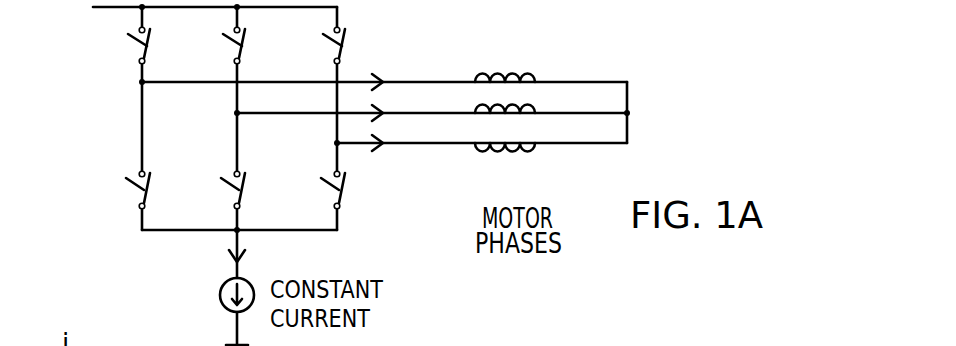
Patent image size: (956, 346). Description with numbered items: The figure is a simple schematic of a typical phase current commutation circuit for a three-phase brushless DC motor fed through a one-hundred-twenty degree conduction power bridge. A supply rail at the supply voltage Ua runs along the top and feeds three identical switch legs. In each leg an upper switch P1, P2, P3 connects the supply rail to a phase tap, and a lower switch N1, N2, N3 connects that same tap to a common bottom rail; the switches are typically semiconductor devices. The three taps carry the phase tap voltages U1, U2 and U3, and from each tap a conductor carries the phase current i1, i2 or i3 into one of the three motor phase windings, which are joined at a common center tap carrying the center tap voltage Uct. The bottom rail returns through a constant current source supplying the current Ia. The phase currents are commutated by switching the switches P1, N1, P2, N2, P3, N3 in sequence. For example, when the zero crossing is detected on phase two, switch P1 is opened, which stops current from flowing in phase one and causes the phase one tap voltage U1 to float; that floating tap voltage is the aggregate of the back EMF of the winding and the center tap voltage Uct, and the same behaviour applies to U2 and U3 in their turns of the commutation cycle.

The supply voltage rail Ua is at (198, 13).
The switch P1 is at (123, 47).
The switch P2 is at (217, 47).
The switch P3 is at (316, 47).
The switch N1 is at (119, 190).
The switch N2 is at (215, 190).
The switch N3 is at (315, 190).
The phase tap voltage U1 is at (364, 86).
The phase tap voltage U2 is at (411, 118).
The phase tap voltage U3 is at (464, 149).
The center tap voltage Uct is at (652, 112).
The phase 1 current i1 is at (391, 66).
The phase 2 current i2 is at (392, 103).
The phase 3 current i3 is at (391, 157).
The constant current source Ia is at (248, 287).